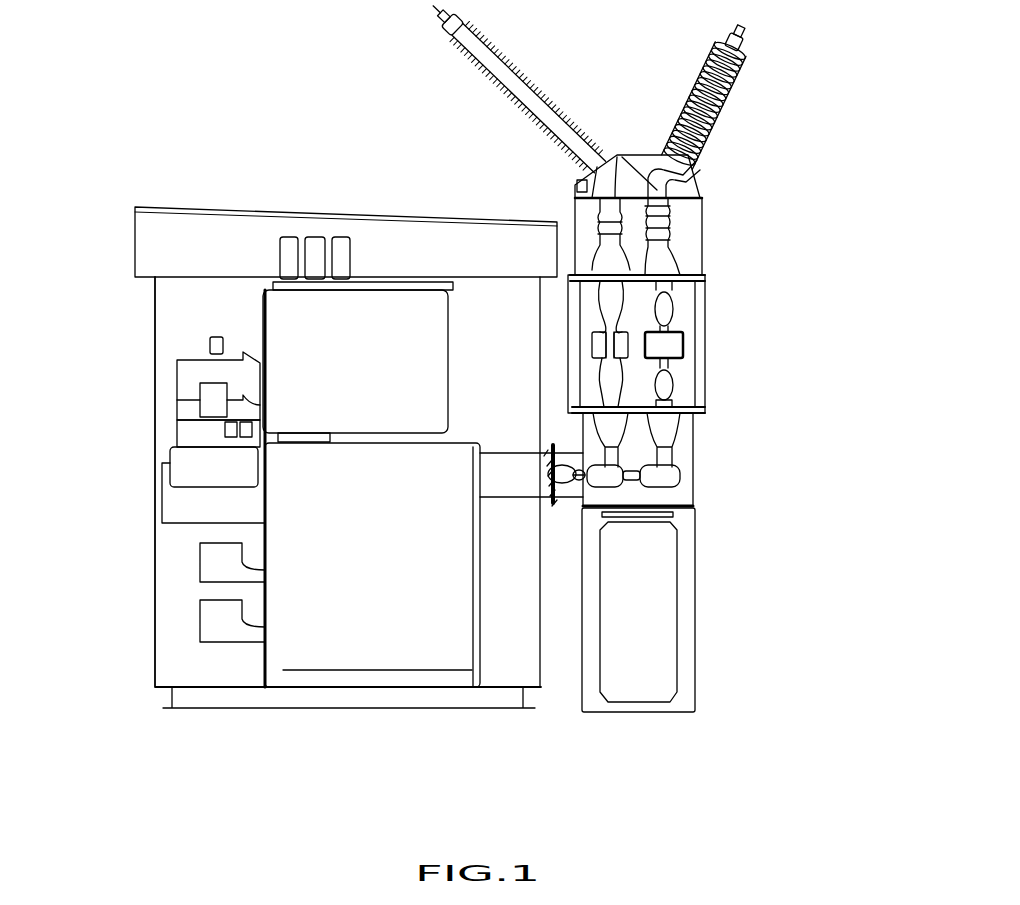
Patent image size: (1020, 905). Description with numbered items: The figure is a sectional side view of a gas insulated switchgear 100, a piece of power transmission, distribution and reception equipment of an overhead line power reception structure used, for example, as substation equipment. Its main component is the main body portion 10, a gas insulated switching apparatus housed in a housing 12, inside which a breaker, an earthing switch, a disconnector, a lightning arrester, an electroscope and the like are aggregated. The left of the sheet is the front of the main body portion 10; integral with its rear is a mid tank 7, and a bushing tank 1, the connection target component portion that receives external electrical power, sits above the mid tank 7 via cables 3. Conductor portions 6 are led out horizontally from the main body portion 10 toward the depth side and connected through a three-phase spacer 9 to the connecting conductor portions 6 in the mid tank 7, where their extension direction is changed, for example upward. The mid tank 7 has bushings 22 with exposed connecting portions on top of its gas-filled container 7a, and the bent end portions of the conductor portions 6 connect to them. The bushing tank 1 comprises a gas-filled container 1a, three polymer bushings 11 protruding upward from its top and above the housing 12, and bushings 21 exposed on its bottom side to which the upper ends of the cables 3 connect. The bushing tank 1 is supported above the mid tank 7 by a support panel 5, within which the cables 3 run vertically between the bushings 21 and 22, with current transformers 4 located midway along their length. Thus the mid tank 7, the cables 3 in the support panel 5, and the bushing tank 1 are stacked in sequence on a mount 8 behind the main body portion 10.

The gas insulated switchgear 100 is at (762, 710).
The bushing tank 1 is at (714, 189).
The container 1a is at (622, 153).
The polymer bushings 11 is at (718, 123).
The bushings 21 is at (668, 258).
The cables 3 is at (673, 305).
The current transformers 4 is at (672, 343).
The support panel 5 is at (702, 385).
The bushings 22 is at (668, 432).
The conductor portions 6 is at (680, 467).
The mid tank 7 is at (706, 490).
The container 7a is at (697, 503).
The mount 8 is at (697, 622).
The three-phase spacer 9 is at (560, 505).
The main body portion 10 is at (277, 535).
The housing 12 is at (155, 634).